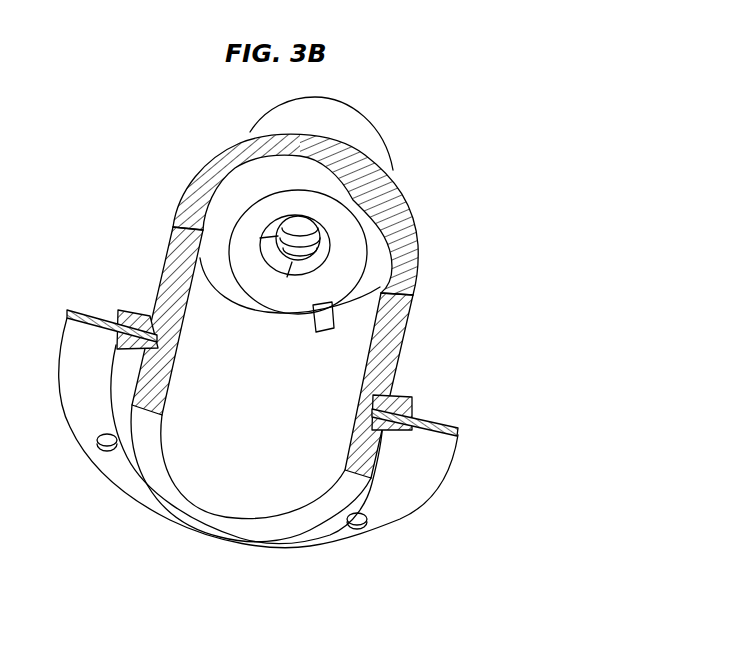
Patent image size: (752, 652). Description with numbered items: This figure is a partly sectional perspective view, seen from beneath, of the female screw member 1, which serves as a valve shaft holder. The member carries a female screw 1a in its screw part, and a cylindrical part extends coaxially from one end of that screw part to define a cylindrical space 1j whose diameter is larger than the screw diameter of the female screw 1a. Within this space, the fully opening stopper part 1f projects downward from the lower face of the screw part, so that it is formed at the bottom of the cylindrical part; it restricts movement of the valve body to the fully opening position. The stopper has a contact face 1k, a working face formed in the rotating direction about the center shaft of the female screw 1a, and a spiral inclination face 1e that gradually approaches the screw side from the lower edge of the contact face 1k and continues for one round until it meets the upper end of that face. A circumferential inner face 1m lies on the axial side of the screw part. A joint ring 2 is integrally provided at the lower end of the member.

The female screw member 1 is at (409, 312).
The female screw 1a is at (262, 238).
The spiral inclination face 1e is at (373, 275).
The fully opening stopper part 1f is at (338, 333).
The cylindrical space 1j is at (297, 403).
The contact face 1k is at (162, 273).
The circumferential inner face 1m is at (316, 313).
The joint ring 2 is at (420, 485).